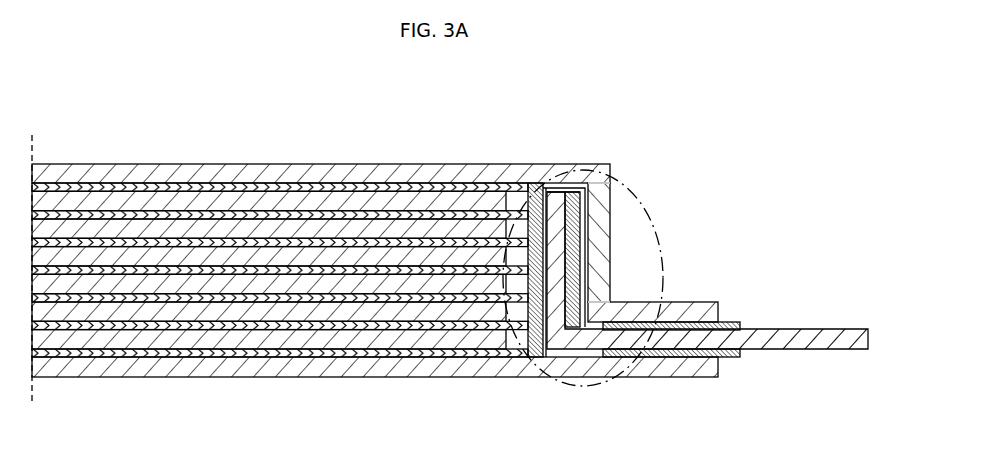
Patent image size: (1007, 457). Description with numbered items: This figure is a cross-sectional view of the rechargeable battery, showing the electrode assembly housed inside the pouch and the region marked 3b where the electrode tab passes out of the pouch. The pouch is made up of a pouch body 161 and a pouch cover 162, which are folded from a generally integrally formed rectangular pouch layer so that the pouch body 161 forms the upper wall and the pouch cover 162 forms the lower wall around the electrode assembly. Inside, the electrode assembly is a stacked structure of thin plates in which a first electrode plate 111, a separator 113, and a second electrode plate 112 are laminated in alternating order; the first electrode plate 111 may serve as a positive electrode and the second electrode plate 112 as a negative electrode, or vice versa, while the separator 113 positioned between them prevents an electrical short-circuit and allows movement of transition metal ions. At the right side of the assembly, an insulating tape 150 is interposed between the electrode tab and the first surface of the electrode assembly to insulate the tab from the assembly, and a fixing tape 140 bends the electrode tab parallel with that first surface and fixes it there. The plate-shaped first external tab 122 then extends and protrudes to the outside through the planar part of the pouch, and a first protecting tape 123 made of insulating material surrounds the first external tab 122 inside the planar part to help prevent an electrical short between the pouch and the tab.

The pouch body 161 is at (191, 177).
The pouch cover 162 is at (158, 367).
The first electrode plate 111 is at (372, 255).
The second electrode plate 112 is at (387, 283).
The separator 113 is at (285, 270).
The insulating tape 150 is at (536, 352).
The fixing tape 140 is at (572, 327).
The first external tab 122 is at (830, 334).
The first protecting tape 123 is at (736, 322).
The detail region 3b is at (635, 202).